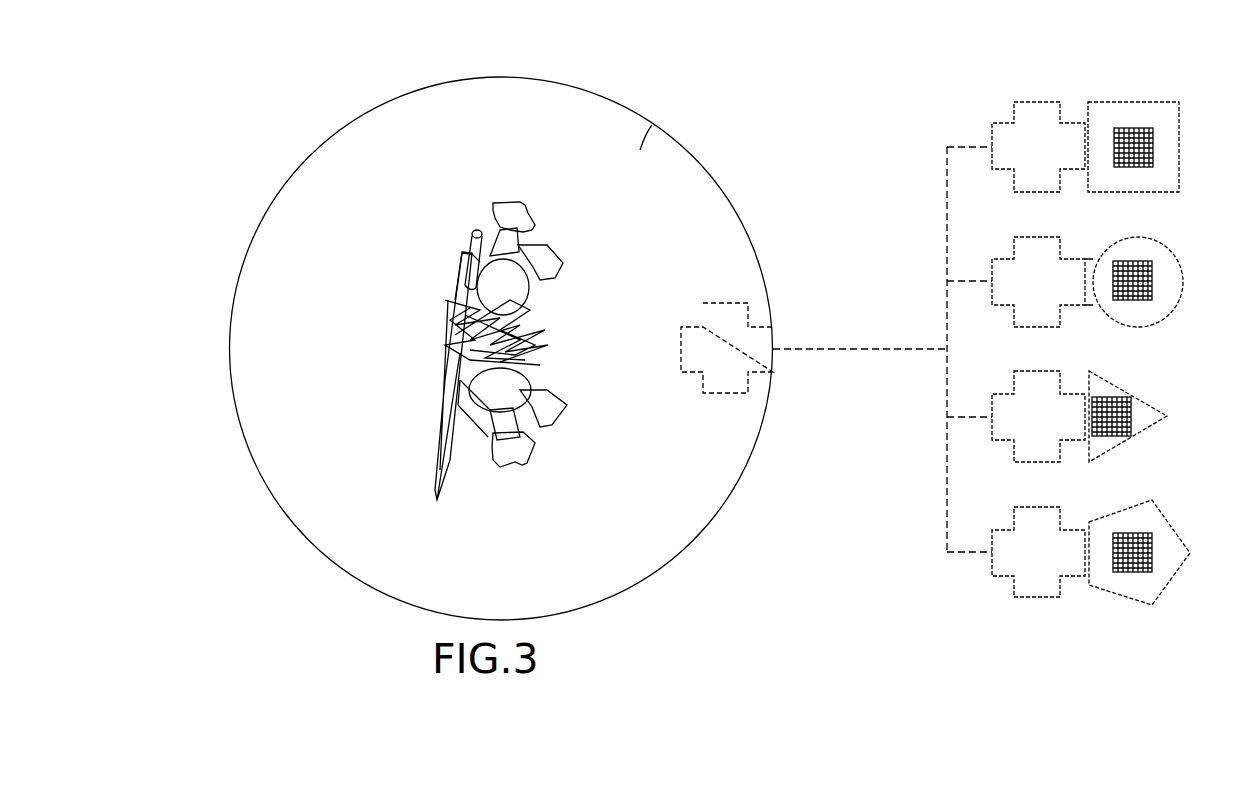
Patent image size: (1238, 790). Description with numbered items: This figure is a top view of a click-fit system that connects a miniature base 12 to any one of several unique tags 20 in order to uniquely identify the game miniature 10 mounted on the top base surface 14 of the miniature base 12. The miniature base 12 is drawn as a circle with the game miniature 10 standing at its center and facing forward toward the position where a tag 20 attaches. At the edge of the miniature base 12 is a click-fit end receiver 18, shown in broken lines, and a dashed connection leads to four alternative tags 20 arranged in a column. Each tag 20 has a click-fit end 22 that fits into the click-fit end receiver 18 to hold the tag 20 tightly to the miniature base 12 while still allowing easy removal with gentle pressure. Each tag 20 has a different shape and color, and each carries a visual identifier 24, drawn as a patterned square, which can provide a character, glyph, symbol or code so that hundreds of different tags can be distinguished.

The game miniature 10 is at (447, 372).
The miniature base 12 is at (730, 200).
The top base surface 14 is at (652, 125).
The click-fit end receiver 18 is at (720, 303).
The unique tag 20 is at (1158, 102).
The click-fit end 22 is at (1037, 102).
The visual identifier 24 is at (1122, 128).